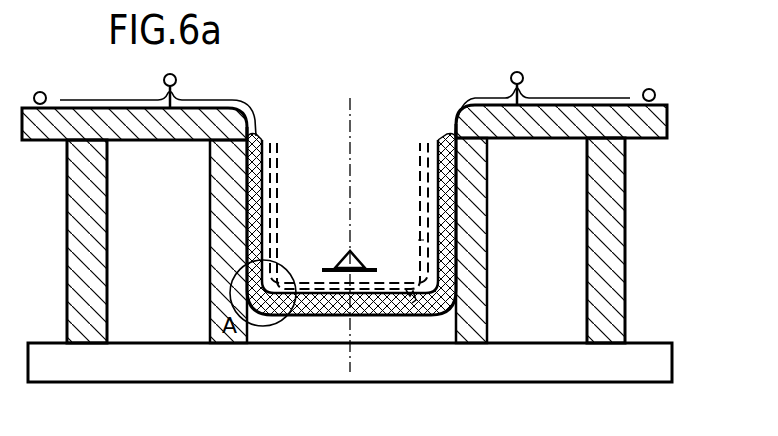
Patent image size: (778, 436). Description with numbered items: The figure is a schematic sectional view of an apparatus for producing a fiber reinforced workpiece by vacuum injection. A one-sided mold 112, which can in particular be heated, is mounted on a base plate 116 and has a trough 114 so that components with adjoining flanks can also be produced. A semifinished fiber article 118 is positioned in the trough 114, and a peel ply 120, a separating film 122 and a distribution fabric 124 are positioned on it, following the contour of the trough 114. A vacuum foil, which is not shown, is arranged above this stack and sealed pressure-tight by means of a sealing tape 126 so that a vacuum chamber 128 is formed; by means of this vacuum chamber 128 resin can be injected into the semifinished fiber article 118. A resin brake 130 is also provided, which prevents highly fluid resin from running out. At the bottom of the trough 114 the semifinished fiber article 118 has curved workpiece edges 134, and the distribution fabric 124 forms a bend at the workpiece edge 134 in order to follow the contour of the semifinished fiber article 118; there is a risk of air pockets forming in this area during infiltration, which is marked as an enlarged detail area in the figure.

The one-sided mold 112 is at (635, 127).
The trough 114 is at (423, 303).
The base plate 116 is at (640, 358).
The semifinished fiber article 118 is at (388, 300).
The peel ply 120 is at (453, 107).
The separating film 122 is at (430, 143).
The distribution fabric 124 is at (420, 240).
The sealing tape 126 is at (42, 92).
The vacuum chamber 128 is at (453, 283).
The resin brake 130 is at (537, 81).
The curved workpiece edge 134 is at (283, 265).